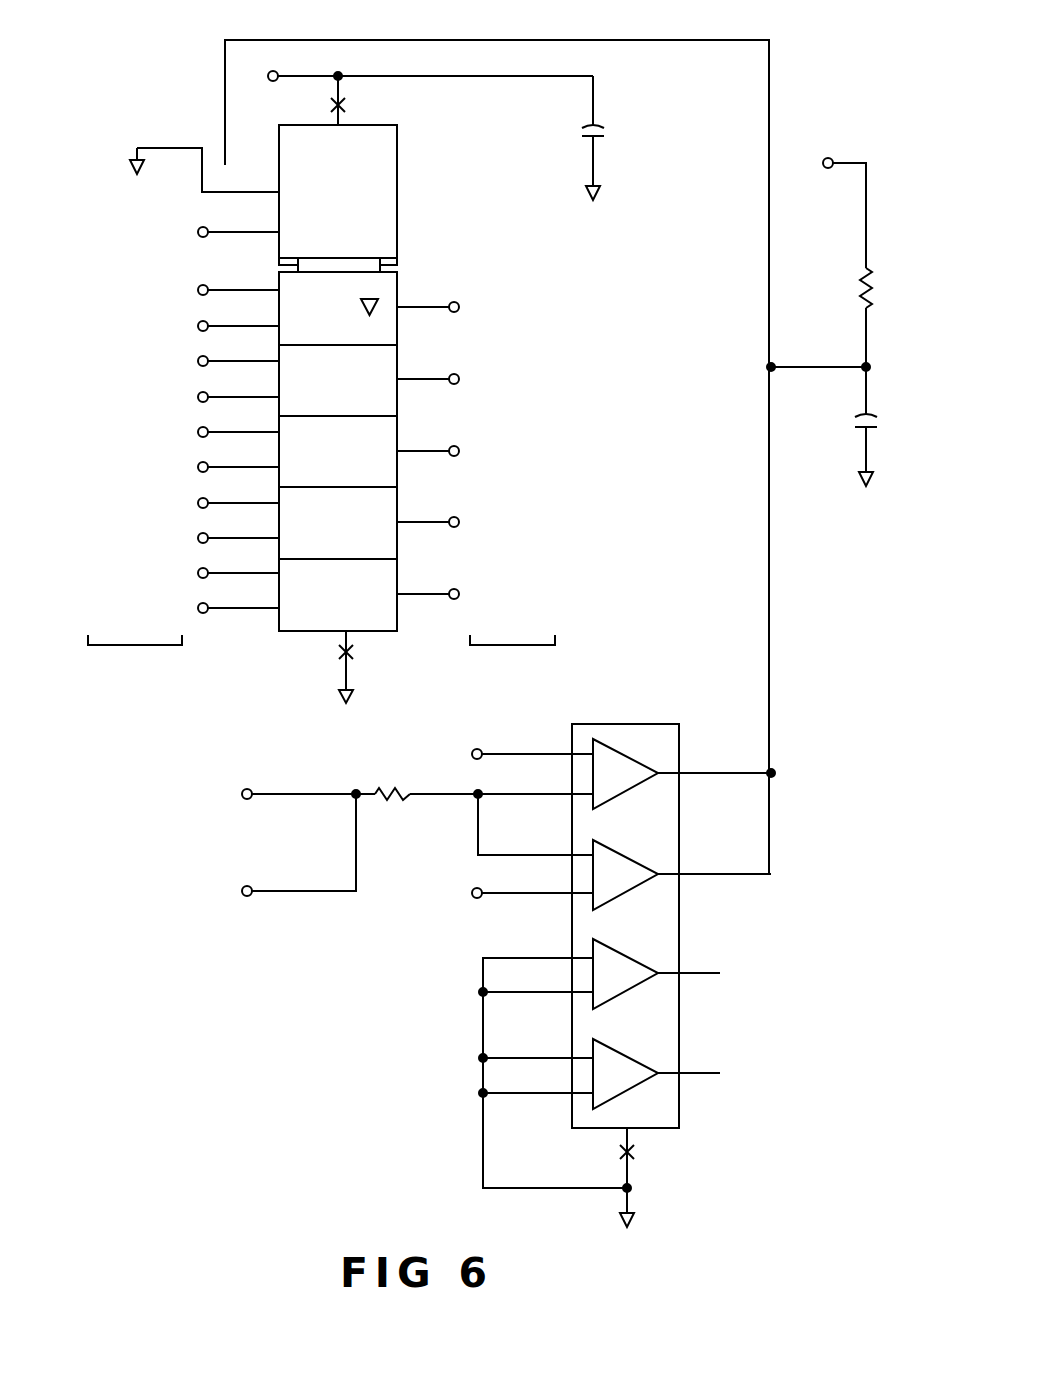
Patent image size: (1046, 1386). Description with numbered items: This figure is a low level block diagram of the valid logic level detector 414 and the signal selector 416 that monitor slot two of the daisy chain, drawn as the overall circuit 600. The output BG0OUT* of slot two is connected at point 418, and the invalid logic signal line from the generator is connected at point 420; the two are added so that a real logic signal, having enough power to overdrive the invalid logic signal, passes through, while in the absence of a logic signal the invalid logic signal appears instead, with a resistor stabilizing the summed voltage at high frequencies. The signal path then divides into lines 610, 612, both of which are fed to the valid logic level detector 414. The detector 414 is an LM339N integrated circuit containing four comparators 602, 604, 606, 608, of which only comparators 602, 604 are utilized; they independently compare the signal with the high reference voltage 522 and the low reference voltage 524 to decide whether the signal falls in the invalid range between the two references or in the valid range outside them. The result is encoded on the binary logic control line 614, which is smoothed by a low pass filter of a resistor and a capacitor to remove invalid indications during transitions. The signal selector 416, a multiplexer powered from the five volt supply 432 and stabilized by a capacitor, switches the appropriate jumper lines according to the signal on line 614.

The test circuit 600 is at (889, 51).
The +5 volt supply line 432 is at (237, 40).
The signal selector 416 is at (397, 170).
The binary logic control line 614 is at (771, 412).
The output connection of slot 2 418 is at (247, 788).
The invalid logic signal line connection 420 is at (247, 897).
The high reference voltage (refH) 522 is at (485, 747).
The low reference voltage (refL) 524 is at (470, 900).
The line 610 is at (500, 797).
The line 612 is at (500, 858).
The valid logic level detector 414 is at (627, 978).
The comparator 602 is at (638, 761).
The comparator 604 is at (638, 862).
The comparator 606 is at (638, 962).
The comparator 608 is at (638, 1062).